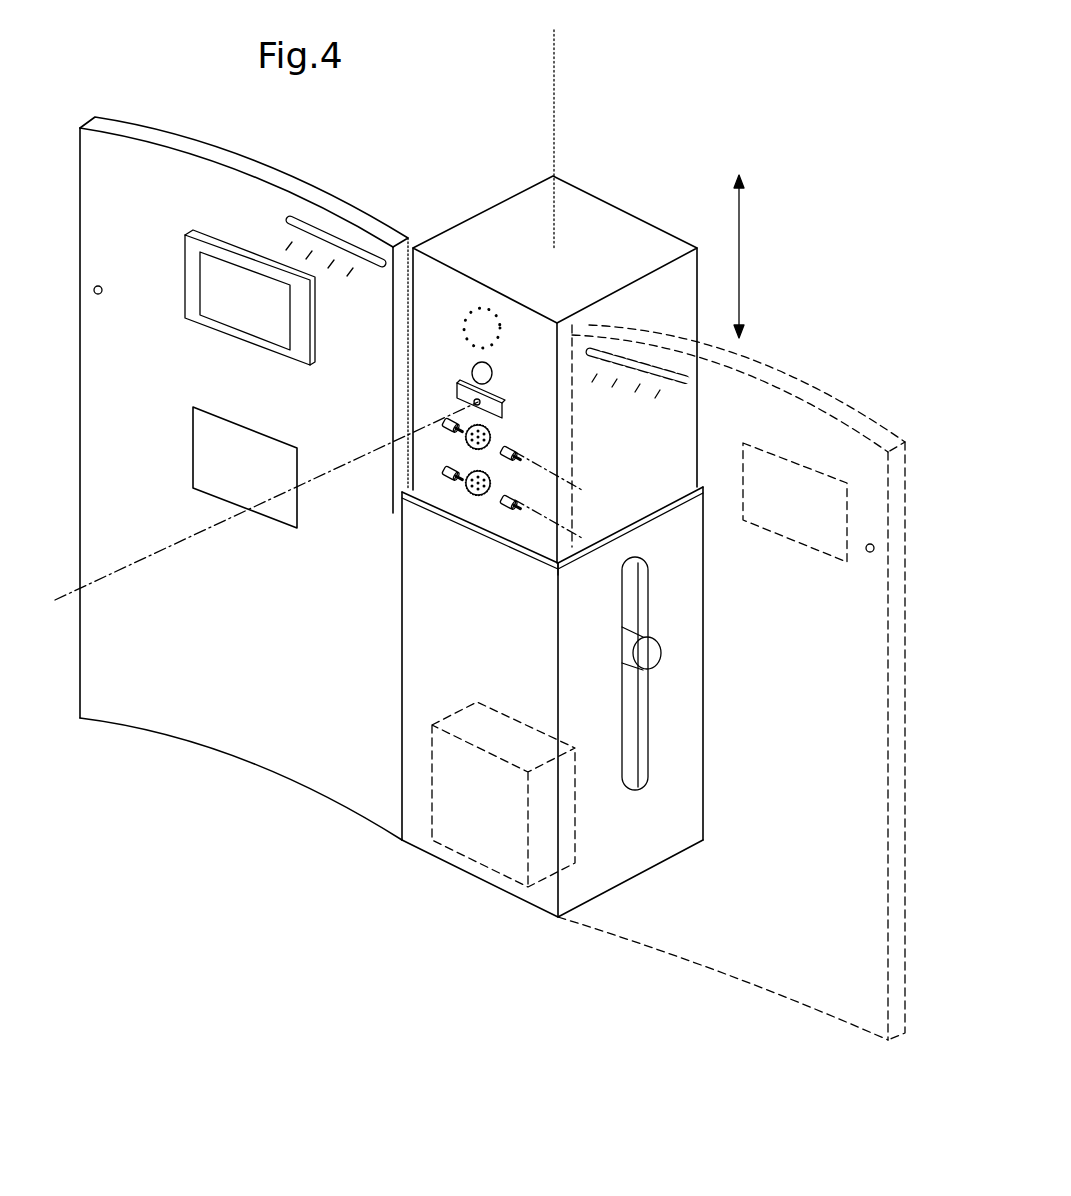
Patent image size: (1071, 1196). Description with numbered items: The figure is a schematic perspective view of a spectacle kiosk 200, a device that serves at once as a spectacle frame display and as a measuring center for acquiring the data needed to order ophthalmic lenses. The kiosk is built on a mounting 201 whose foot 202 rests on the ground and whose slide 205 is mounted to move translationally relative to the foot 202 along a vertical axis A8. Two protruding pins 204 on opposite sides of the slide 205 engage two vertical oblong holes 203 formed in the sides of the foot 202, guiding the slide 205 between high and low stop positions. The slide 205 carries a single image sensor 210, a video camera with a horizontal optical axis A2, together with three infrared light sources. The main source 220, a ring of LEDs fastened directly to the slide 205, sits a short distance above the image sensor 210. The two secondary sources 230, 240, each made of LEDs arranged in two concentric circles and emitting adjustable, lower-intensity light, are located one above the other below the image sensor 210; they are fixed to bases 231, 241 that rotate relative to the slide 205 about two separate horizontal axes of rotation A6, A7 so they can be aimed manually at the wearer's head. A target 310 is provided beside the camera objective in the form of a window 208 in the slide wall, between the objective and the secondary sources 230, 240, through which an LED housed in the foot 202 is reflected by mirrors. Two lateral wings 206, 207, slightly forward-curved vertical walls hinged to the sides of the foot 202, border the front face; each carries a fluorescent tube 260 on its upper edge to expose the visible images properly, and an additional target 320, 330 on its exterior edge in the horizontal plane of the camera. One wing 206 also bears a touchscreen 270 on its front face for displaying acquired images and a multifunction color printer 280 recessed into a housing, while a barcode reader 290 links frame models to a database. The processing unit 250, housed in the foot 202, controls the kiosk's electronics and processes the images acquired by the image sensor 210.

The spectacle kiosk 200 is at (743, 112).
The mounting 201 is at (630, 881).
The foot 202 is at (447, 853).
The vertical oblong hole 203 is at (633, 755).
The protruding pin 204 is at (656, 653).
The slide 205 is at (607, 200).
The lateral wing 206 is at (188, 723).
The lateral wing 207 is at (755, 980).
The window 208 is at (457, 390).
The image sensor 210 is at (480, 365).
The main source 220 is at (465, 298).
The secondary source 230 is at (503, 428).
The base 231 is at (448, 430).
The secondary source 240 is at (487, 511).
The base 241 is at (470, 493).
The processing unit 250 is at (498, 870).
The fluorescent tube 260 is at (338, 242).
The touchscreen 270 is at (192, 285).
The multifunction color printer 280 is at (193, 450).
The barcode reader 290 is at (790, 542).
The target 310 is at (450, 425).
The additional target 320 is at (102, 285).
The additional target 330 is at (868, 553).
The optical axis A2 is at (158, 548).
The axis of rotation A6 is at (540, 503).
The axis of rotation A7 is at (540, 455).
The vertical axis A8 is at (553, 58).